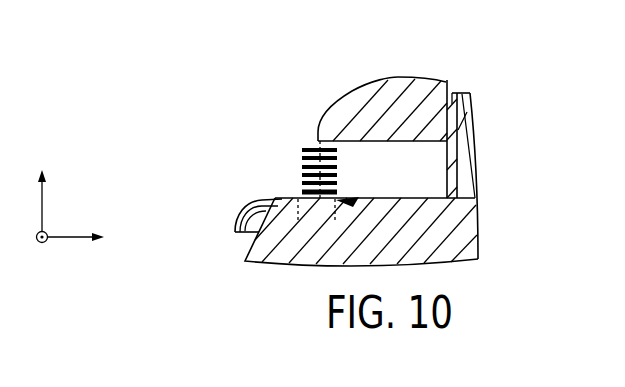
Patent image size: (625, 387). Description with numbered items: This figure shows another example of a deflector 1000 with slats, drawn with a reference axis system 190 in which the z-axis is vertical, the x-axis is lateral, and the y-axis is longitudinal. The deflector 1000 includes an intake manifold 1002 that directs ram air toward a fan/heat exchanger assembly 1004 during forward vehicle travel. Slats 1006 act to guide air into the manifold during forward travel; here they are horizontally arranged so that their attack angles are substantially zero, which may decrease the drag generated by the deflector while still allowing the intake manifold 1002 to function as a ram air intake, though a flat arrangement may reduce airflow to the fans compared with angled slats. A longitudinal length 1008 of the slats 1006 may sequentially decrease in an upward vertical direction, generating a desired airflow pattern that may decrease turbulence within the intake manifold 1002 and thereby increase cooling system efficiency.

The axis system 190 is at (78, 160).
The deflector 1000 is at (282, 104).
The intake manifold 1002 is at (270, 169).
The fan/heat exchanger assembly 1004 is at (456, 93).
The slats 1006 is at (303, 158).
The longitudinal length 1008 is at (278, 200).